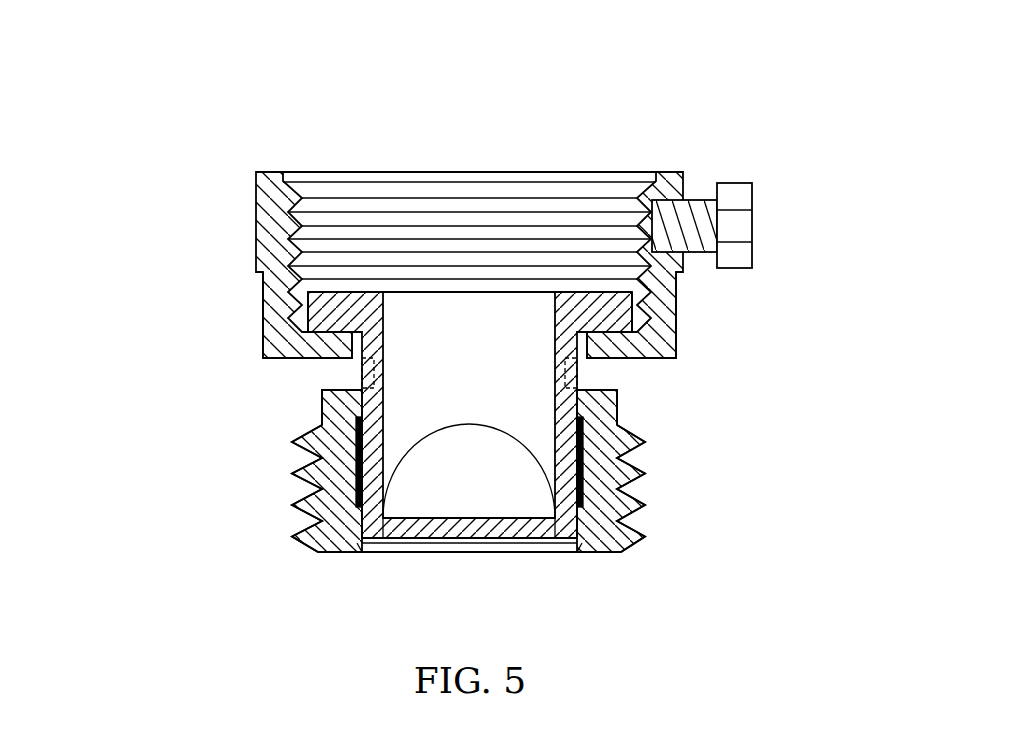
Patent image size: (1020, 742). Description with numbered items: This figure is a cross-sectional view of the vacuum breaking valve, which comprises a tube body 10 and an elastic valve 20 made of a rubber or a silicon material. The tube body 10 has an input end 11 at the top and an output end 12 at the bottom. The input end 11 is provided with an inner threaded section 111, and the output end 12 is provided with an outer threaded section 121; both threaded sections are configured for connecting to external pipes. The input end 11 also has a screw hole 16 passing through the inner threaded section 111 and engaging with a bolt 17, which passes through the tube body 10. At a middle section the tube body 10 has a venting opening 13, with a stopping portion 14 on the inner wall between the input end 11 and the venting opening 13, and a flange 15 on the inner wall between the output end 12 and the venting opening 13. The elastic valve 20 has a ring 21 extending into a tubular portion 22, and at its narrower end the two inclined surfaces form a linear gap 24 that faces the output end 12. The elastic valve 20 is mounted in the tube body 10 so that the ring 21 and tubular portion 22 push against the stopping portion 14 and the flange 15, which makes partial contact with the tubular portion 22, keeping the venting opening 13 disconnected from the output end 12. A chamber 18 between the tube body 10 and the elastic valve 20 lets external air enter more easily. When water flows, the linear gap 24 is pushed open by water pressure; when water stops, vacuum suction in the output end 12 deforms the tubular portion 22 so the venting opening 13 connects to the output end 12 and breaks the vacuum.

The tube body 10 is at (226, 235).
The input end 11 is at (268, 172).
The inner threaded section 111 is at (305, 215).
The output end 12 is at (592, 553).
The outer threaded section 121 is at (640, 492).
The venting opening 13 is at (356, 390).
The stopping portion 14 is at (313, 353).
The flange 15 is at (580, 402).
The screw hole 16 is at (660, 186).
The bolt 17 is at (747, 226).
The chamber 18 is at (607, 325).
The elastic valve 20 is at (489, 278).
The ring 21 is at (296, 304).
The tubular portion 22 is at (577, 372).
The linear gap 24 is at (453, 528).